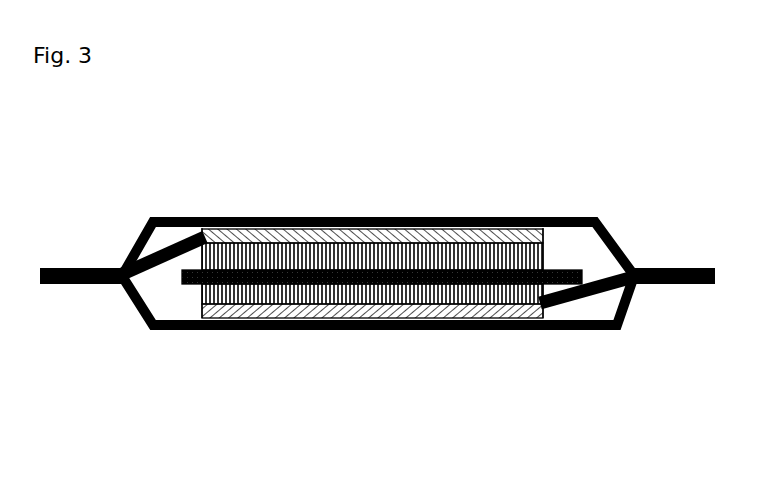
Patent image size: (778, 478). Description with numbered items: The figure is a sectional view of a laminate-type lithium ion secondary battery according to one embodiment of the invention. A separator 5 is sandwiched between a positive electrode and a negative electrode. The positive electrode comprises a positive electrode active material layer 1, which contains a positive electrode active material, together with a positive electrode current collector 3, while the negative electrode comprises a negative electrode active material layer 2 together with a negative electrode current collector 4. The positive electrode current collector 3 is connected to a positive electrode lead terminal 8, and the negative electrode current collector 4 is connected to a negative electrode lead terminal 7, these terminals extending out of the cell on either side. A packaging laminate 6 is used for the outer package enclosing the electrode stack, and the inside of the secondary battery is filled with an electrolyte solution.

The positive electrode active material layer 1 is at (418, 322).
The negative electrode active material layer 2 is at (395, 218).
The positive electrode current collector 3 is at (325, 322).
The negative electrode current collector 4 is at (258, 218).
The separator 5 is at (480, 320).
The packaging laminate 6 is at (268, 320).
The negative electrode lead terminal 7 is at (92, 285).
The positive electrode lead terminal 8 is at (578, 308).